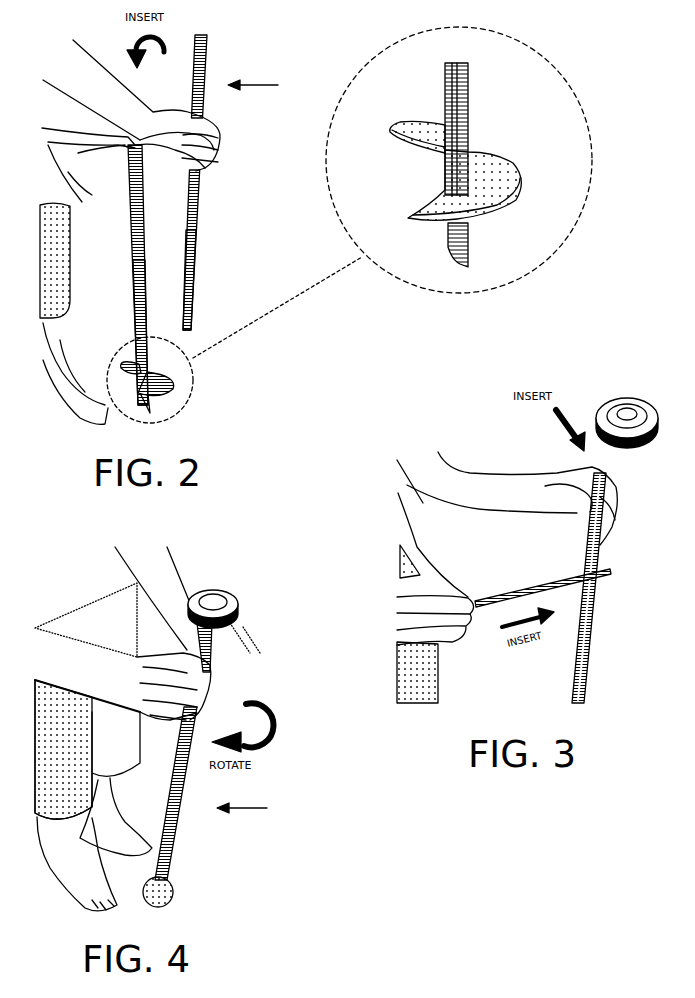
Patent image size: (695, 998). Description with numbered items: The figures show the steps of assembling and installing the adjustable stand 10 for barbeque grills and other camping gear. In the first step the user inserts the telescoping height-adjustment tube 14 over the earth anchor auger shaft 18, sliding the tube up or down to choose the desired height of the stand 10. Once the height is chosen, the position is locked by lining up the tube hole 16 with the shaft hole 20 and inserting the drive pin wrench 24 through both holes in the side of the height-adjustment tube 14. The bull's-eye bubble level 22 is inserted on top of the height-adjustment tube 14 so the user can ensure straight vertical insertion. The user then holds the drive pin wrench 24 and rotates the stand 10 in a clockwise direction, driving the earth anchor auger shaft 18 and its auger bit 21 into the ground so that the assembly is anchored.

In FIG. 2, the adjustable stand 10 is at (271, 86).
In FIG. 3, the adjustable stand 10 is at (611, 655).
In FIG. 4, the adjustable stand 10 is at (258, 809).
In FIG. 2, the telescoping height-adjustment tube 14 is at (198, 203).
In FIG. 2, the tube hole 16 is at (195, 250).
In FIG. 2, the earth anchor auger shaft 18 is at (130, 228).
In FIG. 4, the earth anchor auger shaft 18 is at (172, 853).
In FIG. 2, the shaft hole 20 is at (137, 287).
In FIG. 2, the auger bit 21 is at (170, 386).
In FIG. 3, the bull's-eye bubble level 22 is at (632, 453).
In FIG. 4, the bull's-eye bubble level 22 is at (227, 590).
In FIG. 3, the drive pin wrench 24 is at (520, 590).
In FIG. 4, the drive pin wrench 24 is at (213, 657).